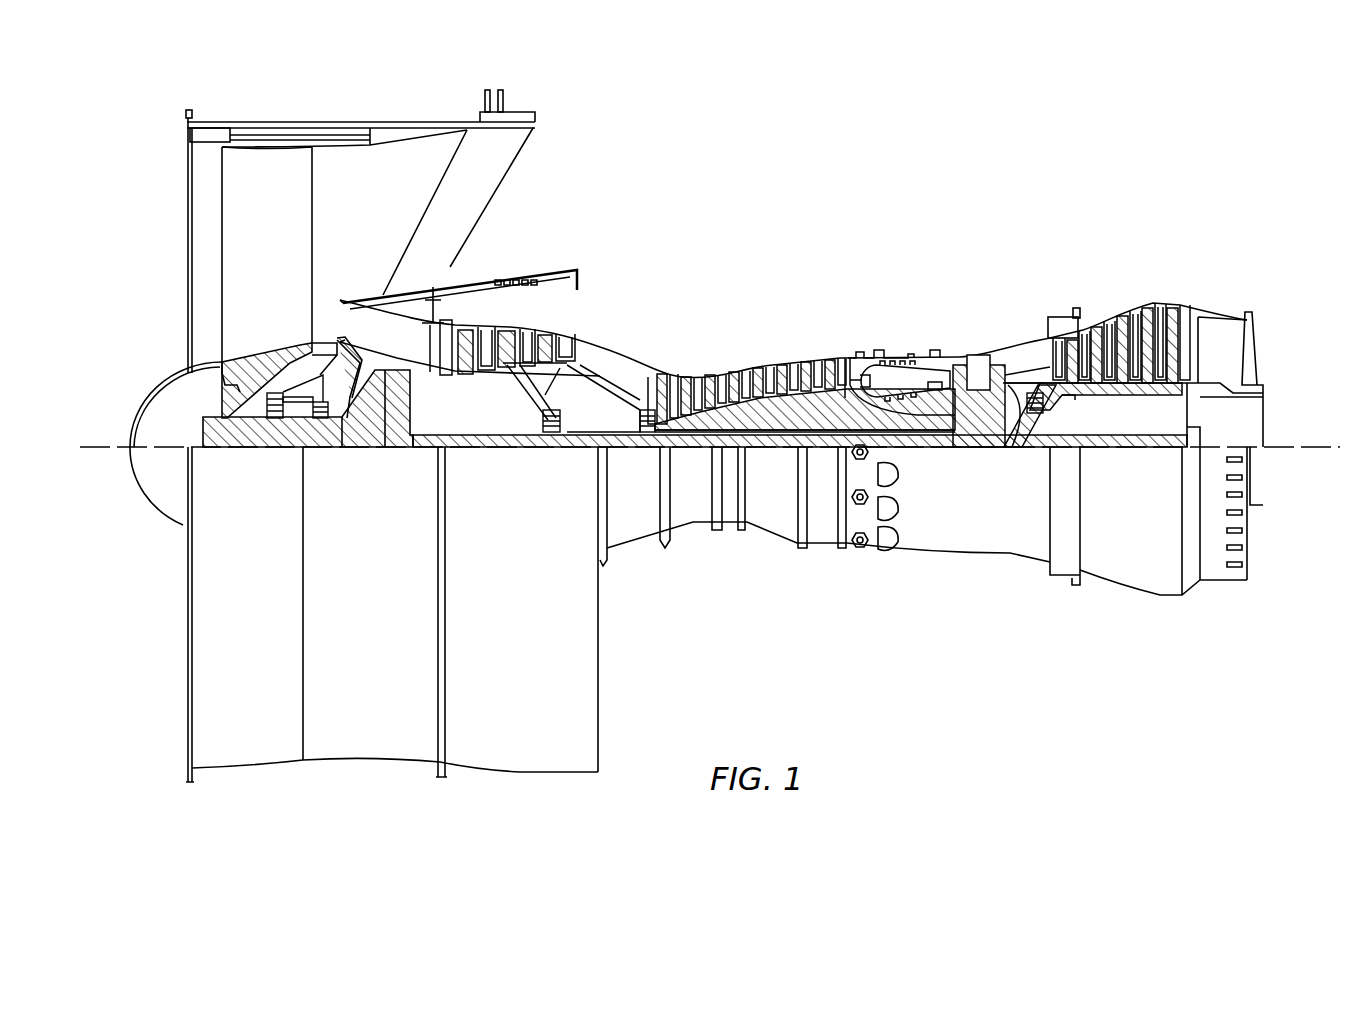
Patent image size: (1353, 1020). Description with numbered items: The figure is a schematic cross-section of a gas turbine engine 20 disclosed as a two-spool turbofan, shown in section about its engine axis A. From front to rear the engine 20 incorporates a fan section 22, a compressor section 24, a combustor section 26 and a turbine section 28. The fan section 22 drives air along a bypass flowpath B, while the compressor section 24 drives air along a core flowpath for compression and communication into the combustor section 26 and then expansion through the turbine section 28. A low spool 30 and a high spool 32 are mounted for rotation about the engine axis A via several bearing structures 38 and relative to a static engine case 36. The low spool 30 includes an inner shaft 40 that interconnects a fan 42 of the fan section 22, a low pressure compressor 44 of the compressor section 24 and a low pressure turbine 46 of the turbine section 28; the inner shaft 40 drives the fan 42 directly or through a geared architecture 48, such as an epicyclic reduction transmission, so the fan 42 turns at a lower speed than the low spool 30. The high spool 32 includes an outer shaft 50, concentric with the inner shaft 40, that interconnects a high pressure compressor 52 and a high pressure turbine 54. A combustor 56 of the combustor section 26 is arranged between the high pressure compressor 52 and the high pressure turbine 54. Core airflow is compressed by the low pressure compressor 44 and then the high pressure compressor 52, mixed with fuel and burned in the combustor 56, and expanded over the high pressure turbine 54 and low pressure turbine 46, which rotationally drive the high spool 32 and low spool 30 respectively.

The gas turbine engine 20 is at (937, 162).
The fan section 22 is at (180, 106).
The compressor section 24 is at (450, 248).
The combustor section 26 is at (847, 248).
The turbine section 28 is at (1190, 248).
The low spool 30 is at (775, 449).
The high spool 32 is at (817, 412).
The static engine case 36 is at (825, 545).
The bearing structures 38 is at (266, 448).
The inner shaft 40 is at (622, 450).
The fan 42 is at (283, 296).
The low pressure compressor 44 is at (522, 340).
The low pressure turbine 46 is at (1127, 313).
The geared architecture 48 is at (396, 428).
The outer shaft 50 is at (910, 448).
The high pressure compressor 52 is at (757, 413).
The high pressure turbine 54 is at (977, 357).
The combustor 56 is at (902, 385).
The engine axis A is at (1310, 440).
The bypass flowpath B is at (283, 207).